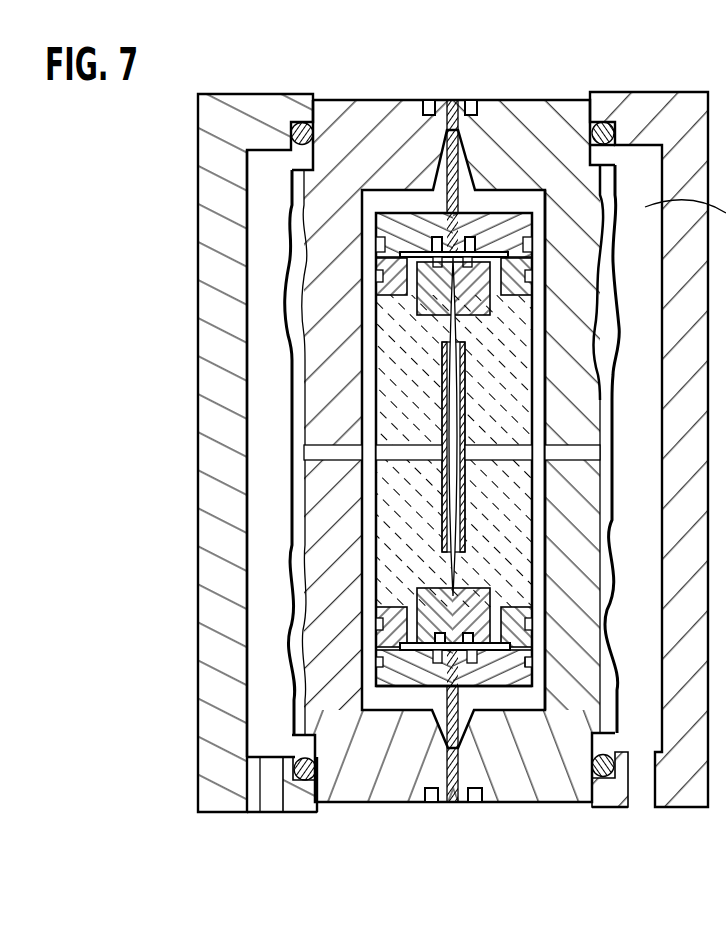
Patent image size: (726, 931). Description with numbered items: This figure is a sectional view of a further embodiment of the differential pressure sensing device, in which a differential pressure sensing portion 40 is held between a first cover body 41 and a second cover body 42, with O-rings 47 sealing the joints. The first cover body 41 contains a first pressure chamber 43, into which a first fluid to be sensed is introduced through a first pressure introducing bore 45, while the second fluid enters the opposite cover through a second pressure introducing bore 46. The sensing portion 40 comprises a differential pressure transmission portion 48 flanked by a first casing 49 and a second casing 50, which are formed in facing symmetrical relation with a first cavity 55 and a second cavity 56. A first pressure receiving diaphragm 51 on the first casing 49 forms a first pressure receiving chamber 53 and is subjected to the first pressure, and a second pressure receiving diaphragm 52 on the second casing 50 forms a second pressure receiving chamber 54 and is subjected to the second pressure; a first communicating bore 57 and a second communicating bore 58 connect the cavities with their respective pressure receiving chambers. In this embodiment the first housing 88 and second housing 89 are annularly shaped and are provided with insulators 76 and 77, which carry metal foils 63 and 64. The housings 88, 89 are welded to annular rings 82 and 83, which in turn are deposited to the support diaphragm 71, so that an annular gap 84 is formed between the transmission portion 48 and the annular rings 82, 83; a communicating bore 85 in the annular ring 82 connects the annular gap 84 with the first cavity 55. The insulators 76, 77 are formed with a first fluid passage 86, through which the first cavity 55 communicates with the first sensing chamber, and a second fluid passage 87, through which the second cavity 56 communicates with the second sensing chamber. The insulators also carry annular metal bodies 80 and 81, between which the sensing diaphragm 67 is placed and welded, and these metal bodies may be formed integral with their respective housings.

The differential pressure sensing portion 40 is at (488, 88).
The first cover body 41 is at (262, 93).
The second cover body 42 is at (632, 92).
The first pressure chamber 43 is at (260, 204).
The first pressure introducing bore 45 is at (266, 797).
The second pressure introducing bore 46 is at (630, 793).
The O-ring 47 is at (297, 146).
The differential pressure transmission portion 48 is at (609, 146).
The first casing 49 is at (372, 100).
The second casing 50 is at (528, 100).
The first pressure receiving diaphragm 51 is at (292, 242).
The second pressure receiving diaphragm 52 is at (617, 243).
The first pressure receiving chamber 53 is at (286, 311).
The second pressure receiving chamber 54 is at (605, 318).
The first cavity 55 is at (362, 323).
The second cavity 56 is at (553, 322).
The first communicating bore 57 is at (325, 445).
The second communicating bore 58 is at (585, 444).
The metal foil 63 is at (442, 480).
The metal foil 64 is at (465, 480).
The sensing diaphragm 67 is at (455, 530).
The support diaphragm 71 is at (462, 720).
The insulator 76 is at (375, 588).
The insulator 77 is at (520, 586).
The annular metal body 80 is at (385, 651).
The annular metal body 81 is at (500, 633).
The annular ring 82 is at (373, 680).
The annular ring 83 is at (535, 675).
The annular gap 84 is at (446, 686).
The communicating bore 85 is at (428, 220).
The first fluid passage 86 is at (382, 460).
The second fluid passage 87 is at (500, 445).
The first housing 88 is at (380, 625).
The second housing 89 is at (525, 626).